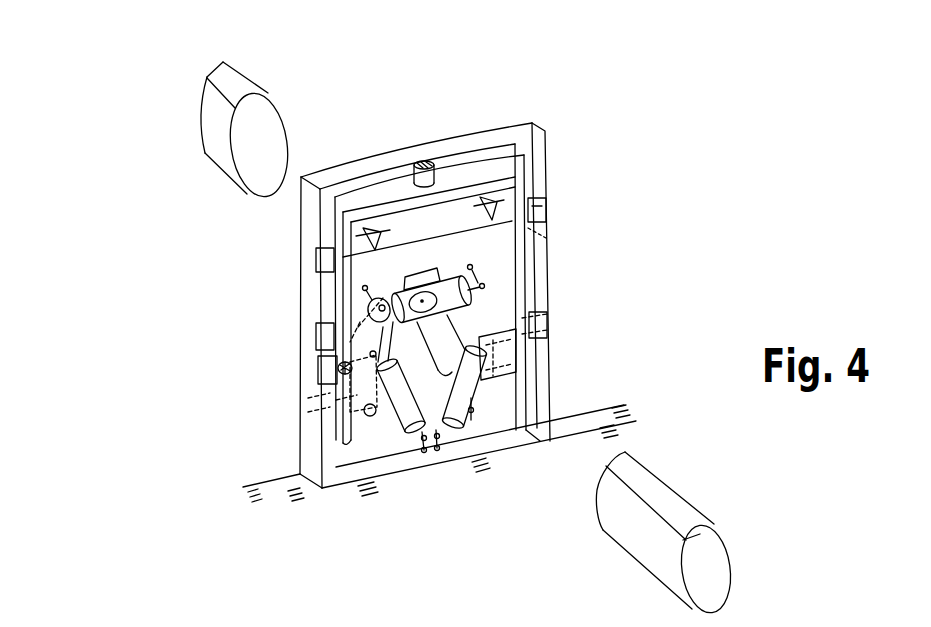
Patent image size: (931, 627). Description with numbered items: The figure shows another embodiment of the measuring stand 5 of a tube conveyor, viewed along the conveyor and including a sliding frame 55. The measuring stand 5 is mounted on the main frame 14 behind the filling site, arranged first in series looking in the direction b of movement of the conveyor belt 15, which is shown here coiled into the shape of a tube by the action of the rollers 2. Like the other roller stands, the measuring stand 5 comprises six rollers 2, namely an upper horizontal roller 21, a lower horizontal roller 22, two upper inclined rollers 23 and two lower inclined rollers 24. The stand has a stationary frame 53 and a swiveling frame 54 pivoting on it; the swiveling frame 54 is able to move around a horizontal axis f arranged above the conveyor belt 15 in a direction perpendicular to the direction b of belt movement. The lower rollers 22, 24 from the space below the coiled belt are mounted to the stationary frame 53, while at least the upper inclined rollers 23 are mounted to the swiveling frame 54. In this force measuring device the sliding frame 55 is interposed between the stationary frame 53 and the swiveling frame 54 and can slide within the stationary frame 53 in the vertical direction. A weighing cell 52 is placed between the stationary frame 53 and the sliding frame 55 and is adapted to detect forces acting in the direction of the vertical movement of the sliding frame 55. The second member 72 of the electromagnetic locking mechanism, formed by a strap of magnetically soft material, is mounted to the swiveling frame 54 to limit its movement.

The rollers 2 is at (470, 447).
The measuring stand 5 is at (503, 116).
The main frame 14 is at (278, 508).
The conveyor belt 15 is at (263, 90).
The upper horizontal roller 21 is at (469, 307).
The lower horizontal roller 22 is at (368, 413).
The upper inclined rollers 23 is at (132, 617).
The lower inclined rollers 24 is at (473, 414).
The weighing cell 52 is at (434, 174).
The stationary frame 53 is at (297, 348).
The swiveling frame 54 is at (360, 273).
The sliding frame 55 is at (545, 220).
The second member of the locking mechanism 72 is at (548, 345).
The horizontal axis f is at (386, 222).
The direction of movement b is at (217, 131).